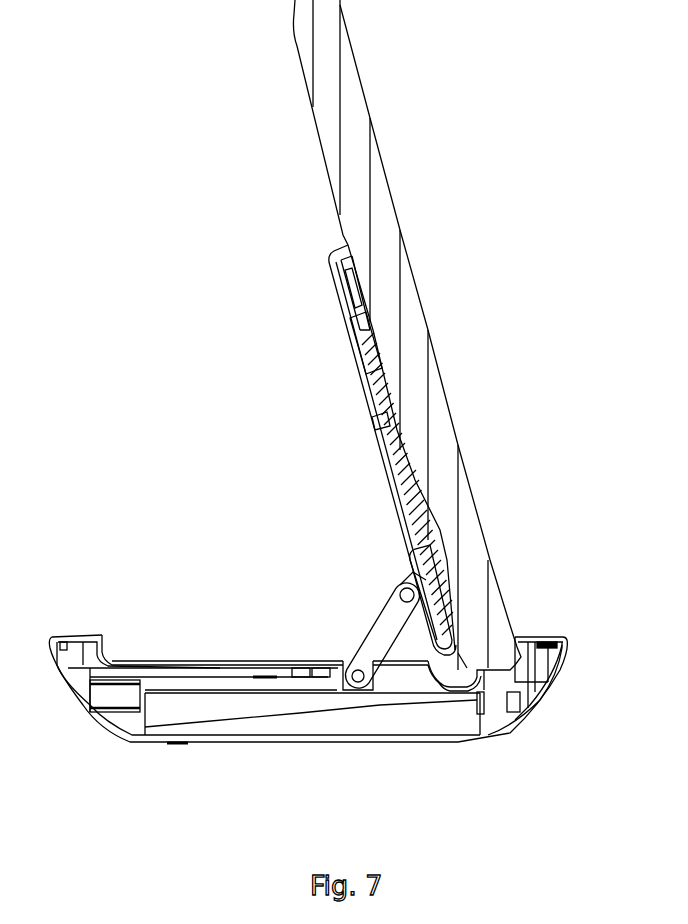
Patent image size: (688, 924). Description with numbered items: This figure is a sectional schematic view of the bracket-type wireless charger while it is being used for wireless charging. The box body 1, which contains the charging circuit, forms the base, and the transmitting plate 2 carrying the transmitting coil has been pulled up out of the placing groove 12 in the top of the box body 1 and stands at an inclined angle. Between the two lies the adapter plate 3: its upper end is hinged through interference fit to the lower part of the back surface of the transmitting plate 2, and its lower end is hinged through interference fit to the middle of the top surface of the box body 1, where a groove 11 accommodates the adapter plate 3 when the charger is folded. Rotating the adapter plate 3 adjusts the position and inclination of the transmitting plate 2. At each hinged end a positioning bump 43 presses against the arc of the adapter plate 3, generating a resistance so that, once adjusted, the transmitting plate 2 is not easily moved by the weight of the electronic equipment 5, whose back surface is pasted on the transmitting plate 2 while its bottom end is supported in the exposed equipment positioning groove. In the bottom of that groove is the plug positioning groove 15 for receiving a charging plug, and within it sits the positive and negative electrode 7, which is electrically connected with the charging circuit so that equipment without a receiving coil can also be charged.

The box body 1 is at (252, 742).
The transmitting plate 2 is at (360, 398).
The adapter plate 3 is at (375, 632).
The electronic equipment 5 is at (410, 335).
The positive and negative electrode 7 is at (508, 712).
The groove 11 is at (400, 678).
The placing groove 12 is at (213, 661).
The plug positioning groove 15 is at (488, 690).
The positioning bump 43 is at (421, 582).